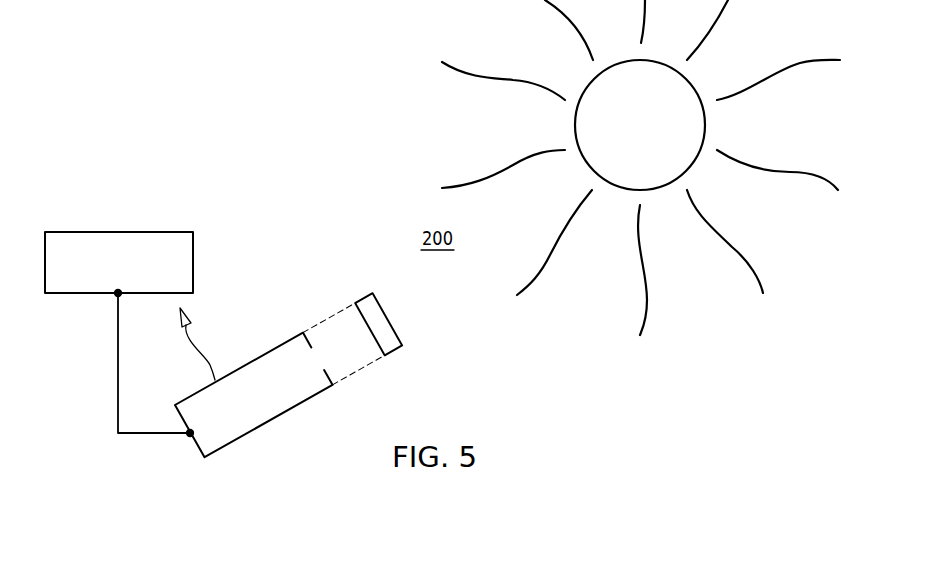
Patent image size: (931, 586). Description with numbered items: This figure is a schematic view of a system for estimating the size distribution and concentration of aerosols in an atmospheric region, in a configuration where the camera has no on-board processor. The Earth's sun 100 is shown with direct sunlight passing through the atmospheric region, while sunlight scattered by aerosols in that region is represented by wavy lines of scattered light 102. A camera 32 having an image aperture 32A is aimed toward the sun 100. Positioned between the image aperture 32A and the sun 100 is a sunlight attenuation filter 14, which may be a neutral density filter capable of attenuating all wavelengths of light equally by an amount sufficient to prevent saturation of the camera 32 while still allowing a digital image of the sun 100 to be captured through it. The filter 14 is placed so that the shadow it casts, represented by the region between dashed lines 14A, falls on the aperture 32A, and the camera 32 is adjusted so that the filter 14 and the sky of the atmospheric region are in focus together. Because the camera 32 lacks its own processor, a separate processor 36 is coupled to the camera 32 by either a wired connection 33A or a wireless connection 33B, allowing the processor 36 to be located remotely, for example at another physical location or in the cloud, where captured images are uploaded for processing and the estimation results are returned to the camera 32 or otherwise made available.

The sun 100 is at (705, 124).
The scattered light 102 is at (473, 78).
The processor 36 is at (158, 232).
The wired connection 33A is at (117, 387).
The wireless connection 33B is at (205, 355).
The camera 32 is at (267, 428).
The image aperture 32A is at (317, 358).
The dashed lines 14A is at (337, 312).
The sunlight attenuation filter 14 is at (400, 347).